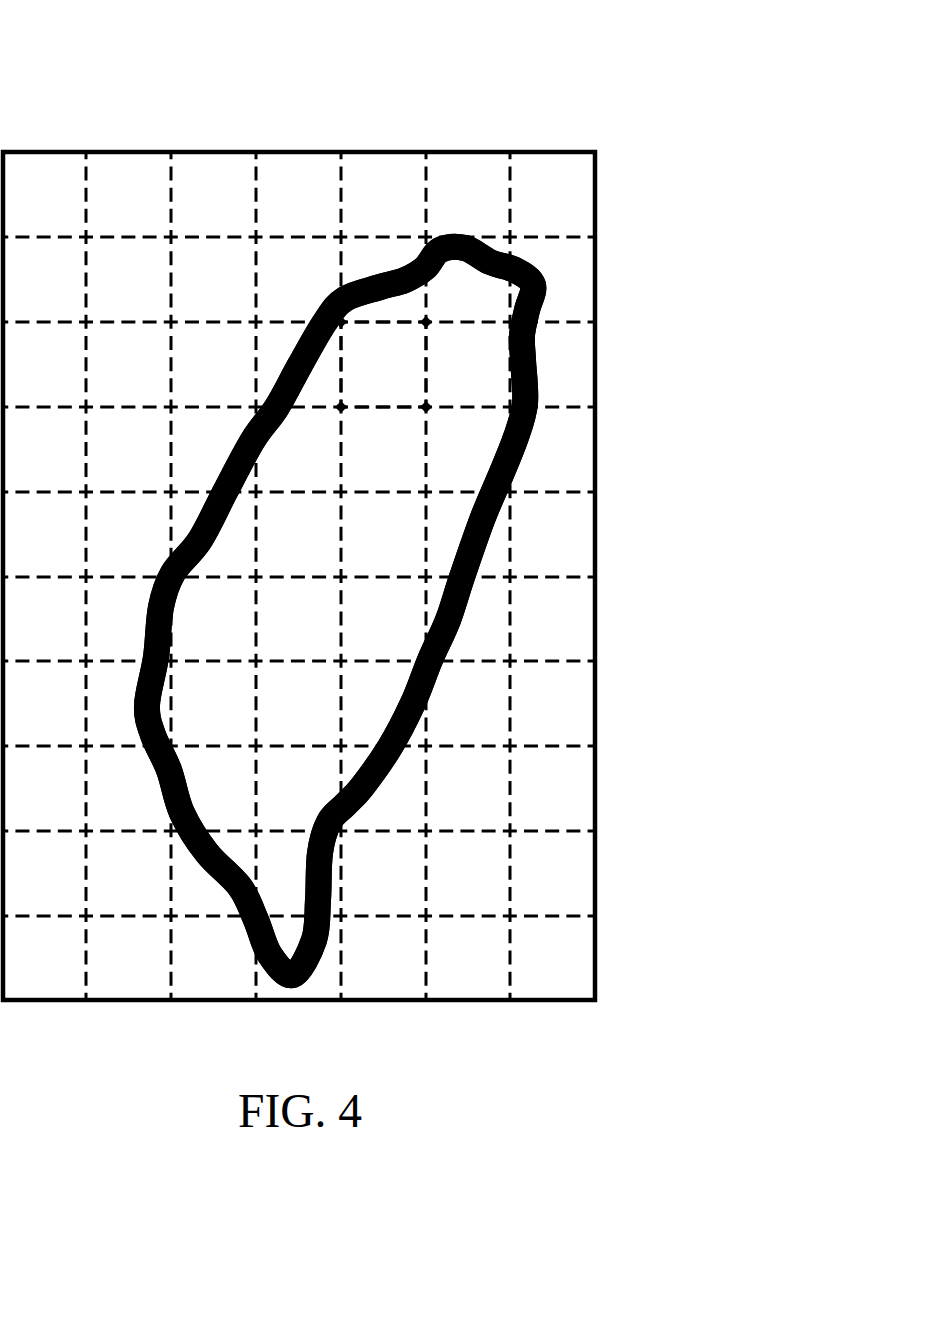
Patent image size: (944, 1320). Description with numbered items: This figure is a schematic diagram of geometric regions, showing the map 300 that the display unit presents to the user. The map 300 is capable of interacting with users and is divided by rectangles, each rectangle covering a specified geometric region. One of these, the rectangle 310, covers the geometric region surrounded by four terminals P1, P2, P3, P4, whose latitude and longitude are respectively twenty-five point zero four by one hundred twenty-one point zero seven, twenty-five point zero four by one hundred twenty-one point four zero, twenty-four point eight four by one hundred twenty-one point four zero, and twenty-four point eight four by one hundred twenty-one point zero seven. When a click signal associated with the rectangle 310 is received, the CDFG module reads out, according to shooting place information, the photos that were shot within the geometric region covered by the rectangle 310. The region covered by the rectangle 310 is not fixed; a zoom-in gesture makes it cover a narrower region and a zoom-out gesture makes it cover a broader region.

The map 300 is at (597, 152).
The rectangle 310 is at (405, 384).
The terminal P1 is at (341, 322).
The terminal P2 is at (426, 322).
The terminal P3 is at (426, 407).
The terminal P4 is at (341, 407).